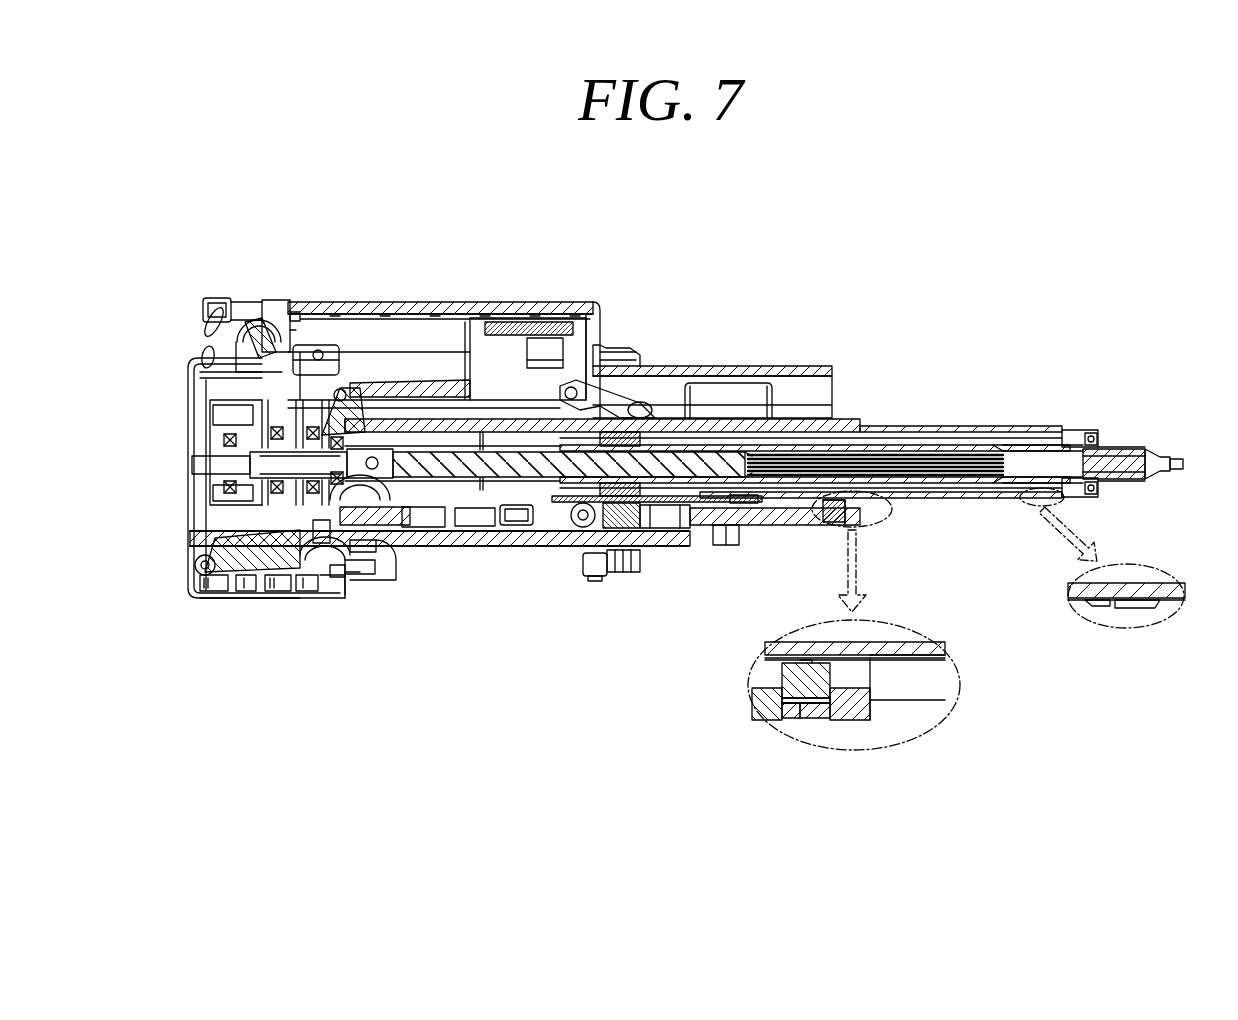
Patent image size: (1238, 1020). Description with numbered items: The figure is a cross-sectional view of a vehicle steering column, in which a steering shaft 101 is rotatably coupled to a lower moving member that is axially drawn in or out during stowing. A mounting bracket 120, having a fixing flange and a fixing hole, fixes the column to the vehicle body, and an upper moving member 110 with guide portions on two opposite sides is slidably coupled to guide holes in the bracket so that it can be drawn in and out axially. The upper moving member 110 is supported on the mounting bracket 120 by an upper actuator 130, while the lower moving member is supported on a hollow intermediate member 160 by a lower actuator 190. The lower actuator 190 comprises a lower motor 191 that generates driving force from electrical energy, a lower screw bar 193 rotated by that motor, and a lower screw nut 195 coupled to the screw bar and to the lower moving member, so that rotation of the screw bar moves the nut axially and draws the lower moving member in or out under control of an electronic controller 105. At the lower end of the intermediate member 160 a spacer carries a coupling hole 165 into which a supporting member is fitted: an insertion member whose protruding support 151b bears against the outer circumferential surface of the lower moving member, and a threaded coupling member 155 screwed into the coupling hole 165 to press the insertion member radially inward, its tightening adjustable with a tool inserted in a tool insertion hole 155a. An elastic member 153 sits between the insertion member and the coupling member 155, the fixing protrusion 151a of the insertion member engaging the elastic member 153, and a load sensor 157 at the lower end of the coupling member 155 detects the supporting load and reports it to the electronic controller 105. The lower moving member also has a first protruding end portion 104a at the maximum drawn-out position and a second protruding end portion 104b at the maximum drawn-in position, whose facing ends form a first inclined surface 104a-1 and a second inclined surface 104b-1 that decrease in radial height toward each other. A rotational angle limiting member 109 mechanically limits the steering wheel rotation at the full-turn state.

The steering shaft 101 is at (1123, 448).
The first protruding end portion 104a is at (885, 697).
The first inclined surface 104a-1 is at (885, 650).
The second protruding end portion 104b is at (1130, 605).
The second inclined surface 104b-1 is at (1095, 603).
The electronic controller 105 is at (256, 598).
The rotational angle limiting member 109 is at (182, 434).
The upper moving member 110 is at (782, 367).
The mounting bracket 120 is at (452, 301).
The upper actuator 130 is at (206, 288).
The fixing protrusion 151a is at (790, 712).
The protruding support 151b is at (806, 658).
The elastic member 153 is at (782, 698).
The coupling member 155 is at (790, 720).
The tool insertion hole 155a is at (810, 720).
The load sensor 157 is at (830, 705).
The intermediate member 160 is at (846, 422).
The coupling hole 165 is at (835, 510).
The lower actuator 190 is at (375, 588).
The lower motor 191 is at (336, 576).
The lower screw bar 193 is at (508, 538).
The lower screw nut 195 is at (638, 552).